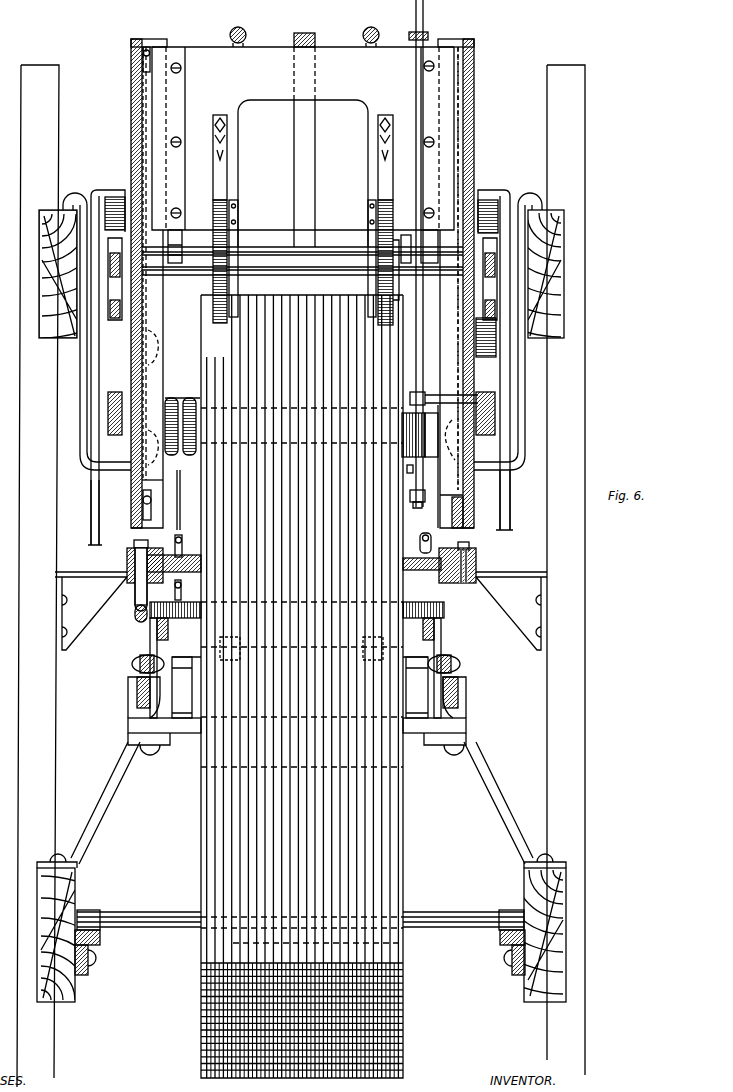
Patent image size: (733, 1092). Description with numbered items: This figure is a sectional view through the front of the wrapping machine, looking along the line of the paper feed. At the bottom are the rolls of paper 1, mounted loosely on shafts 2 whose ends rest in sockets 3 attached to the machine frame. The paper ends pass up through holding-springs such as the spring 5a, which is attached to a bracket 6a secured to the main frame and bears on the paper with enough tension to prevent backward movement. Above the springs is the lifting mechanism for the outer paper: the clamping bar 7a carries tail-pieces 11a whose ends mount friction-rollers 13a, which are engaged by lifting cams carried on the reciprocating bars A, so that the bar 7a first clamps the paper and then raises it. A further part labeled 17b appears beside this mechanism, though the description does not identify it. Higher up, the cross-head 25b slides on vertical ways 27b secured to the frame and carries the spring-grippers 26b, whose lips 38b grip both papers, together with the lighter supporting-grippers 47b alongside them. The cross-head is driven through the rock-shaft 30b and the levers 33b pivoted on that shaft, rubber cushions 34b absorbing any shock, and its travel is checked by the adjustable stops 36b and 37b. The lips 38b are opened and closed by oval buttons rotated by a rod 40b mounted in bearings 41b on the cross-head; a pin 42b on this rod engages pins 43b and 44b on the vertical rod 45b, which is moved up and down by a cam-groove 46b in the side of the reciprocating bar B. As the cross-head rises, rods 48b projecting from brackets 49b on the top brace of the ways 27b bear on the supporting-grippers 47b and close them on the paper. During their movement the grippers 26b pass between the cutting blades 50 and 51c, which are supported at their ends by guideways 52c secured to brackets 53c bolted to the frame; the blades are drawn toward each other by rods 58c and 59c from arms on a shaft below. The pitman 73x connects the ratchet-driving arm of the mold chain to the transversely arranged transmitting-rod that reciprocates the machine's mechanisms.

The rolls of paper 1 is at (200, 994).
The shafts 2 is at (432, 912).
The sockets 3 is at (100, 940).
The holding-spring 5a is at (199, 655).
The bracket 6a is at (300, 687).
The clamping-bar 7a is at (295, 629).
The tail-pieces 11a is at (150, 641).
The friction-rollers 13a is at (132, 662).
The bracket 17b is at (128, 710).
The cross-head 25b is at (303, 165).
The spring-grippers 26b is at (213, 196).
The vertical ways 27b is at (163, 316).
The rock-shaft 30b is at (302, 287).
The levers 33b is at (91, 500).
The rubber cushions 34b is at (118, 197).
The adjustable stop 36b is at (147, 46).
The adjustable stop 37b is at (151, 492).
The lips 38b is at (301, 275).
The rod 40b is at (200, 258).
The bearings 41b is at (428, 36).
The pin 42b is at (406, 235).
The pin 43b is at (404, 270).
The pin 44b is at (407, 474).
The vertical rod 45b is at (416, 366).
The cam-groove 46b is at (444, 392).
The supporting-grippers 47b is at (302, 259).
The rods 48b is at (262, 247).
The brackets 49b is at (315, 196).
The blade 50 is at (169, 508).
The blade 51c is at (189, 590).
The guideways 52c is at (127, 556).
The brackets 53c is at (301, 611).
The rods 58c is at (182, 540).
The rods 59c is at (200, 592).
The pitman 73x is at (133, 618).
The reciprocating bars A is at (137, 696).
The reciprocating bar B is at (301, 403).